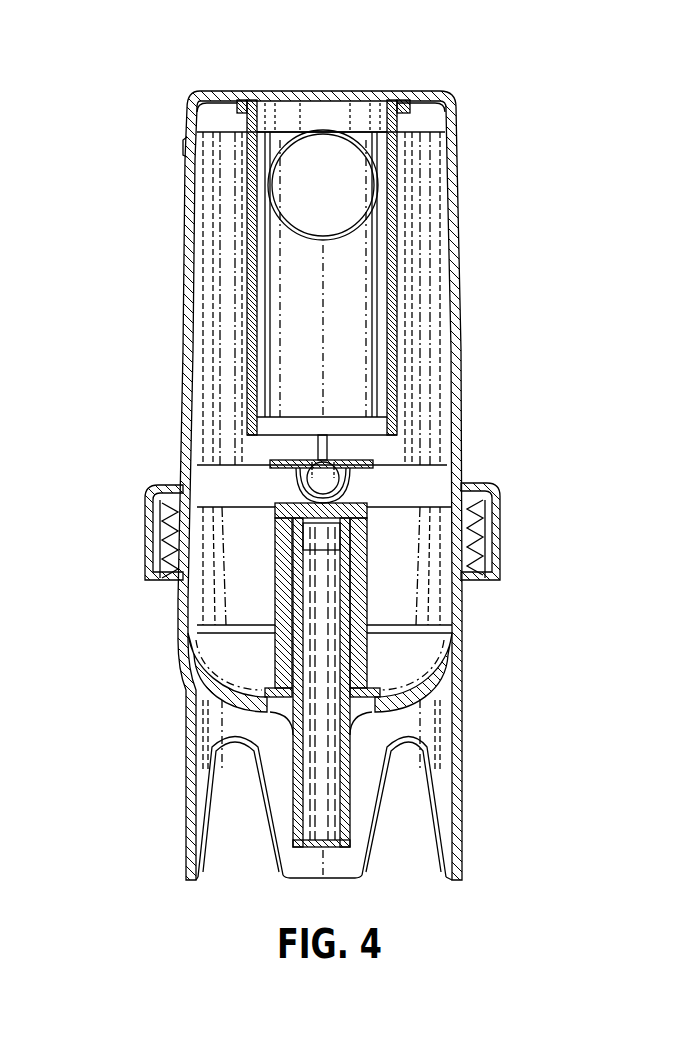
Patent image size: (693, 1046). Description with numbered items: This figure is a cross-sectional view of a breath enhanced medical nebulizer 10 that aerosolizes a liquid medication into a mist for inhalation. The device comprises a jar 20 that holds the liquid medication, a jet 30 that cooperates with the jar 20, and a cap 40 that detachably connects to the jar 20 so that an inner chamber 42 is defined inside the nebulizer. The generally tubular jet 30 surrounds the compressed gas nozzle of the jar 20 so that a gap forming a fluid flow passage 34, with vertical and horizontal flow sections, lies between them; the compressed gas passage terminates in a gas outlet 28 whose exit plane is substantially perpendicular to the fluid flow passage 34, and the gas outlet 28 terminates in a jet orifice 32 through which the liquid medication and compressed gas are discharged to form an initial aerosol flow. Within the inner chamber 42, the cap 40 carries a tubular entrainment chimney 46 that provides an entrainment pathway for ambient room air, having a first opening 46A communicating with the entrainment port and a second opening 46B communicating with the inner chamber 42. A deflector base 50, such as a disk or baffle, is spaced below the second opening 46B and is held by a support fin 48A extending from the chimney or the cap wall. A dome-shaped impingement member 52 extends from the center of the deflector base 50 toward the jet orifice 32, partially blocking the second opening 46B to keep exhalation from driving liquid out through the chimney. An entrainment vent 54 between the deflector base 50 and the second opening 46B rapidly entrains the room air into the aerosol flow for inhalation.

The breath enhanced medical nebulizer 10 is at (110, 165).
The jar 20 is at (466, 736).
The gas outlet 28 is at (321, 527).
The jet 30 is at (269, 587).
The jet orifice 32 is at (280, 512).
The fluid flow passage 34 is at (368, 617).
The cap 40 is at (466, 295).
The inner chamber 42 is at (230, 322).
The entrainment chimney 46 is at (250, 255).
The first opening 46A is at (330, 183).
The second opening 46B is at (352, 435).
The support fin 48A is at (317, 443).
The deflector base 50 is at (373, 466).
The impingement member 52 is at (316, 477).
The entrainment vent 54 is at (367, 447).